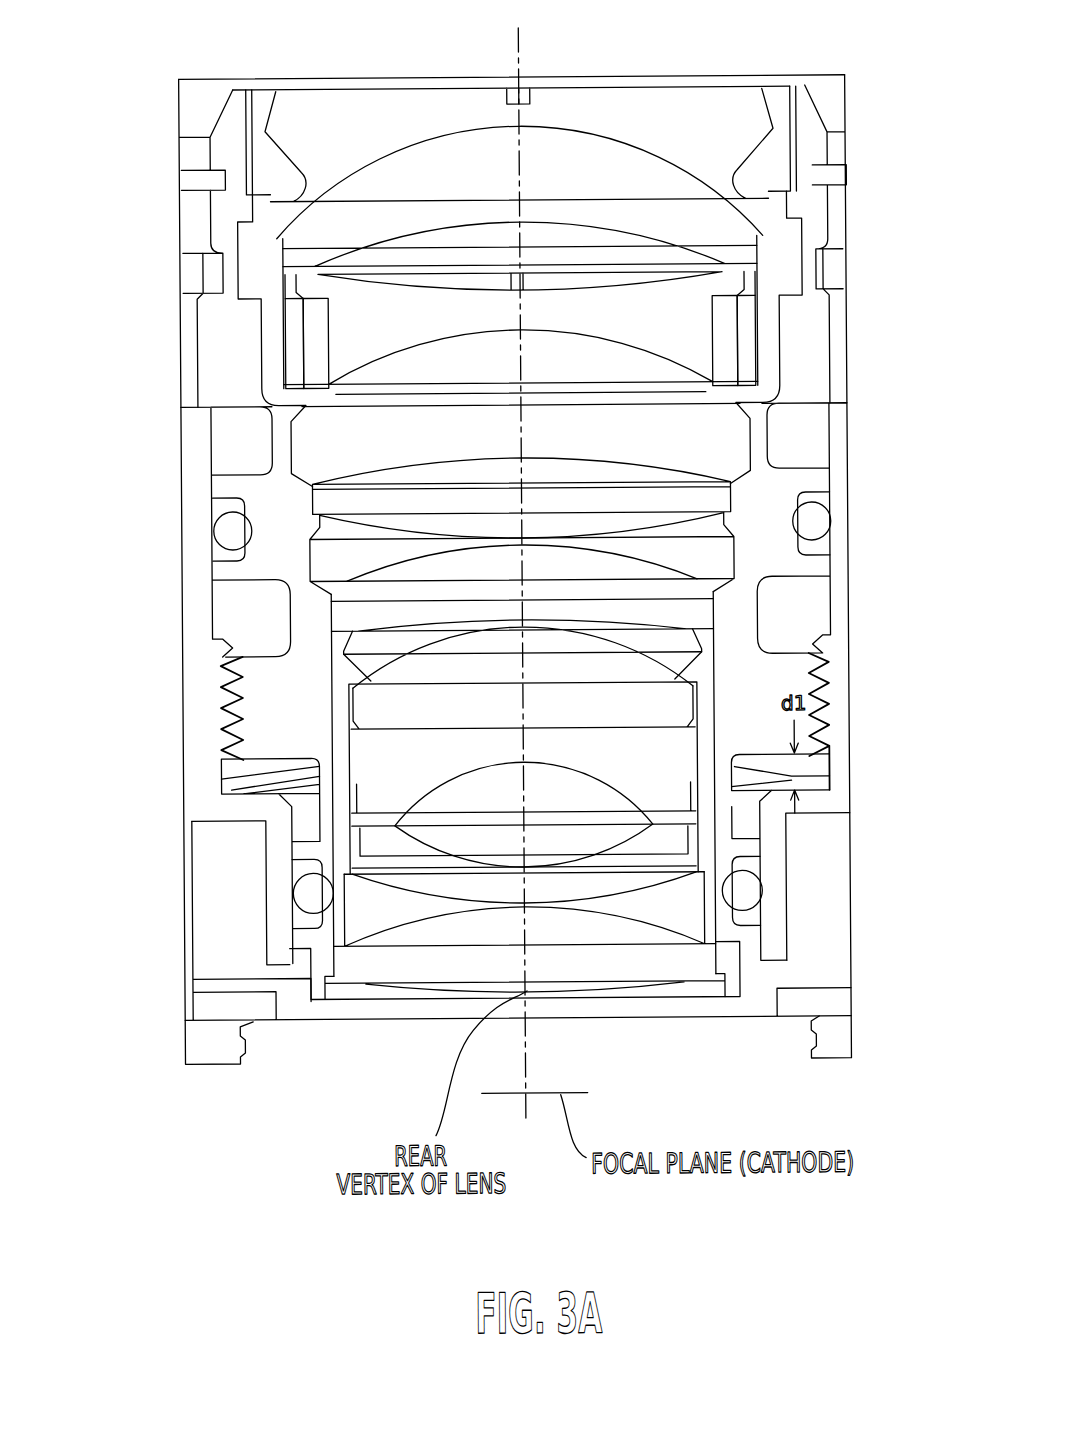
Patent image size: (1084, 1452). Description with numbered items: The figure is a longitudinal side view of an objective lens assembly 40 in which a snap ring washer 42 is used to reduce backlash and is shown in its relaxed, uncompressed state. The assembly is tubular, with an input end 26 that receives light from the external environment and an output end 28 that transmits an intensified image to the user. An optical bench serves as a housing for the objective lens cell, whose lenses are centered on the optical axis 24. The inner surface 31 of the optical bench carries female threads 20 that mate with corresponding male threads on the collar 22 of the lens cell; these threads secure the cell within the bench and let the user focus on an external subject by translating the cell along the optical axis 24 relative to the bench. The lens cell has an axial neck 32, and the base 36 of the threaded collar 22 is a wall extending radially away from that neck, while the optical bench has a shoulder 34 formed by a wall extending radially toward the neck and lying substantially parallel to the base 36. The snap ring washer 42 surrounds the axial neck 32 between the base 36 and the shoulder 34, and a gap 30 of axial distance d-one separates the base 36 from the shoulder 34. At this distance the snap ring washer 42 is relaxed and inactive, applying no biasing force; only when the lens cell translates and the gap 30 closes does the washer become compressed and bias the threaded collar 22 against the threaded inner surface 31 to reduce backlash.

The female threads 20 is at (228, 684).
The collar 22 is at (826, 676).
The optical axis 24 is at (517, 47).
The input end 26 is at (657, 86).
The output end 28 is at (368, 1019).
The gap 30 is at (815, 768).
The inner surface 31 is at (233, 787).
The axial neck 32 is at (790, 818).
The shoulder 34 is at (233, 821).
The base 36 is at (248, 758).
The objective lens assembly 40 is at (626, 44).
The snap ring washer 42 is at (237, 796).